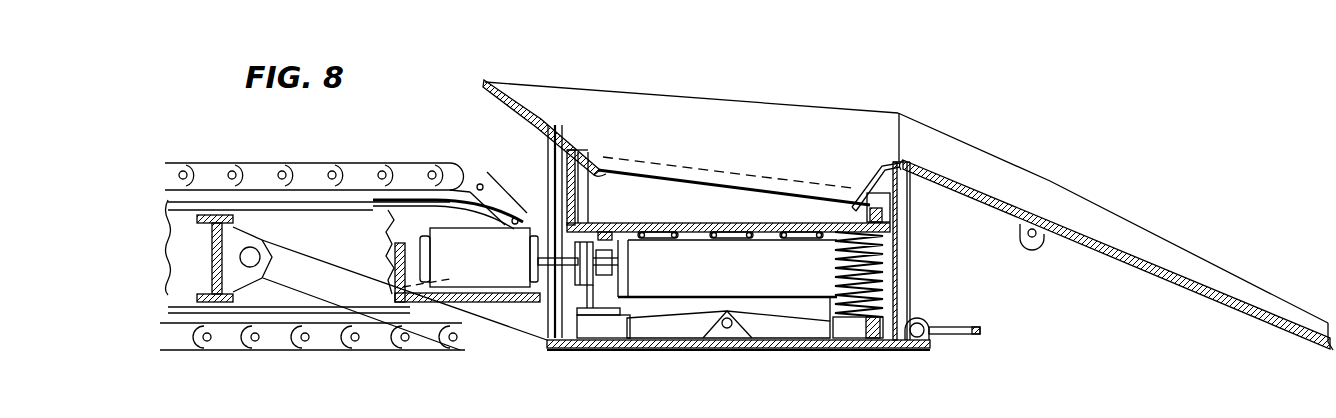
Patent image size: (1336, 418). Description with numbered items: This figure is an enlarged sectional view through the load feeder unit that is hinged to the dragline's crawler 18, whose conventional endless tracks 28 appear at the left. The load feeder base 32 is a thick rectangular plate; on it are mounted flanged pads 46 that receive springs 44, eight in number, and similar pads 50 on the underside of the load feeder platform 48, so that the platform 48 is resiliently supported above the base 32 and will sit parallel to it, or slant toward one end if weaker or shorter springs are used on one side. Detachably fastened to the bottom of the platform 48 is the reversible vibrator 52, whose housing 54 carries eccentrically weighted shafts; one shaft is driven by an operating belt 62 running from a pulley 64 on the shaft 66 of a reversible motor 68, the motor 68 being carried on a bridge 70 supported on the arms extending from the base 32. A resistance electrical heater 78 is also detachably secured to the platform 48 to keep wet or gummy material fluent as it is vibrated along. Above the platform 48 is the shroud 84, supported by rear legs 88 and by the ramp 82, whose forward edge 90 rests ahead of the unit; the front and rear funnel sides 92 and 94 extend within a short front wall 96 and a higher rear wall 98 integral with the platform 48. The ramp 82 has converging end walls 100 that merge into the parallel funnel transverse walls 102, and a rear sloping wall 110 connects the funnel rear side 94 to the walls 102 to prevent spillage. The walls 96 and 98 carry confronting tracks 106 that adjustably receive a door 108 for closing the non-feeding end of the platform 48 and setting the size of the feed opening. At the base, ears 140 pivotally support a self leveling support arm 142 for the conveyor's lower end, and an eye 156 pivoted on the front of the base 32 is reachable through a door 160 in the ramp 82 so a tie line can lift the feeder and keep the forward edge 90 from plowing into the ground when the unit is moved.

The crawler 18 is at (185, 241).
The endless tracks 28 is at (303, 176).
The load feeder base 32 is at (893, 348).
The springs 44 is at (836, 272).
The flanged pads 46 is at (870, 339).
The load feeder platform 48 is at (668, 227).
The pads 50 is at (620, 241).
The vibrator 52 is at (742, 286).
The vibrator housing 54 is at (821, 299).
The operating belt 62 is at (583, 250).
The pulley 64 is at (577, 293).
The motor shaft 66 is at (543, 240).
The reversible motor 68 is at (490, 255).
The bridge 70 is at (420, 292).
The resistance electrical heater 78 is at (731, 240).
The ramp 82 is at (1137, 258).
The shroud 84 is at (944, 133).
The rear legs 88 is at (908, 245).
The forward edge of ramp 90 is at (1330, 351).
The front funnel side 92 is at (862, 200).
The rear funnel side 94 is at (584, 152).
The front wall 96 is at (890, 212).
The rear wall 98 is at (567, 166).
The ramp end walls 100 is at (1092, 208).
The funnel transverse walls 102 is at (653, 92).
The tracks 106 is at (582, 185).
The door 108 is at (730, 200).
The rear sloping wall 110 is at (518, 95).
The ears 140 is at (730, 329).
The self leveling support arms 142 is at (688, 329).
The eye 156 is at (978, 334).
The door 160 is at (998, 195).